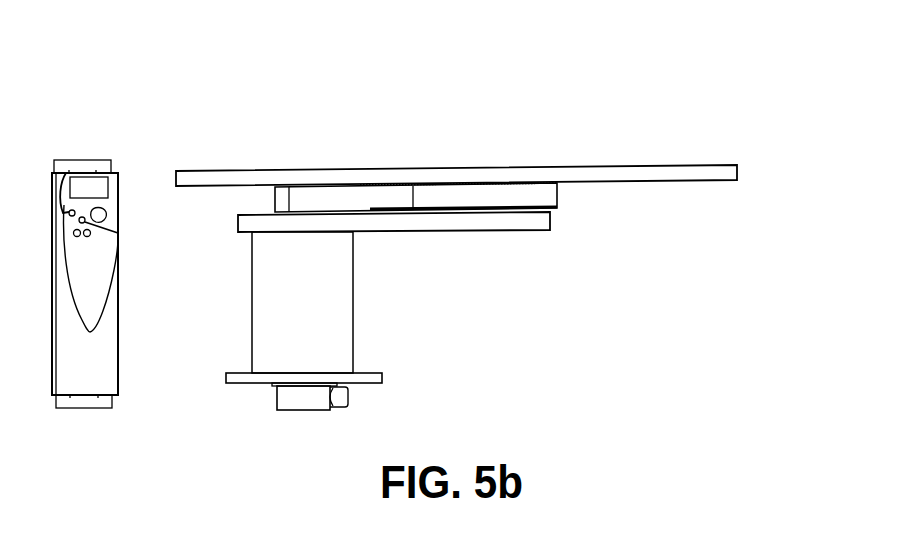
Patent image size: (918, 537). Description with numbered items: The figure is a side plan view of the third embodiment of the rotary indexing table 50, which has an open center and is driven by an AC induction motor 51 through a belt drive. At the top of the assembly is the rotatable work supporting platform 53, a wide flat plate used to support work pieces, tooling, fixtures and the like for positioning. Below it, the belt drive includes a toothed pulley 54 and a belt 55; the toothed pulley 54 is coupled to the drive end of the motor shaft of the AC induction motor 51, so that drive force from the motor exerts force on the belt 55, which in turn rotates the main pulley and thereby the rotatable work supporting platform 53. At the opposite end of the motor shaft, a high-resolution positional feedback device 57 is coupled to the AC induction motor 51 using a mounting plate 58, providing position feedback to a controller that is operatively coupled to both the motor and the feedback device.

The rotary indexing table 50 is at (758, 253).
The AC induction motor 51 is at (312, 302).
The rotatable work supporting platform 53 is at (693, 172).
The toothed pulley 54 is at (83, 165).
The belt 55 is at (543, 197).
The high-resolution positional feedback device 57 is at (320, 400).
The mounting plate 58 is at (373, 376).